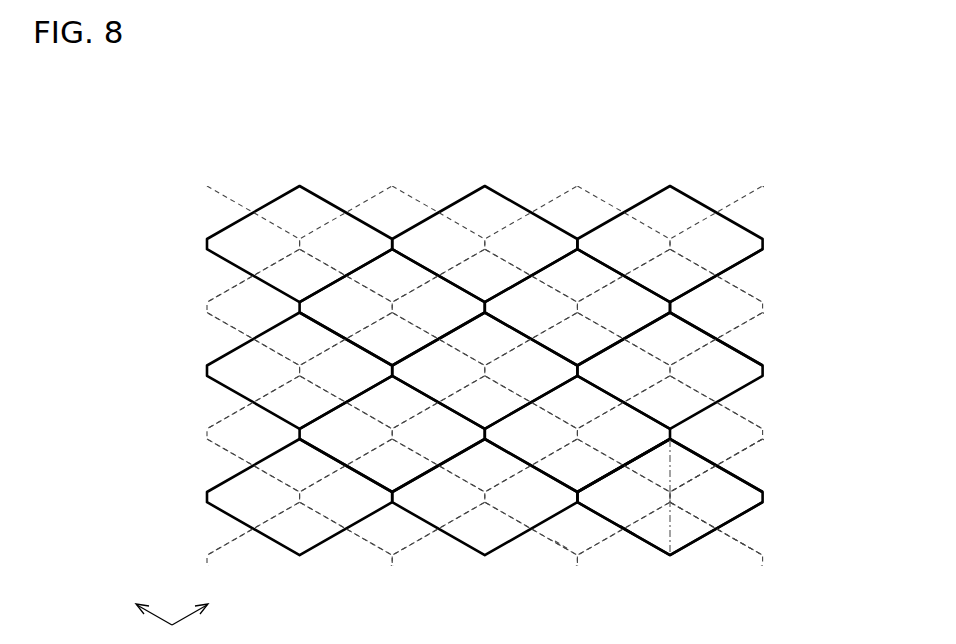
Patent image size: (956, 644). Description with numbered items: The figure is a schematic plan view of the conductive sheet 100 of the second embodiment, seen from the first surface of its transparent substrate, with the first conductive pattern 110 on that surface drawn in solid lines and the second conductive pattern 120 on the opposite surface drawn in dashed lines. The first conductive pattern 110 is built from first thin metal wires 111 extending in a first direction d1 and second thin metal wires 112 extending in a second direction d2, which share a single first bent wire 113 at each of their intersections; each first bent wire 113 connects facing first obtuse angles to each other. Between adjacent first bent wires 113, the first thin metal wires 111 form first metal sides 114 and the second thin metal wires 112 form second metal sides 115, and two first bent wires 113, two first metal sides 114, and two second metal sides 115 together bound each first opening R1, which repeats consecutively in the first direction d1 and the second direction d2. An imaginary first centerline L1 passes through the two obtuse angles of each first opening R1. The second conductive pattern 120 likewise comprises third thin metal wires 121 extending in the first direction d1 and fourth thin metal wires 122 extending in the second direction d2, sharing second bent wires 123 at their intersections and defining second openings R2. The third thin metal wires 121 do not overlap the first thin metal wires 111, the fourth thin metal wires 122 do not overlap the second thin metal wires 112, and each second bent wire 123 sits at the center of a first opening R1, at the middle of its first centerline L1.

The conductive sheet 100 is at (288, 150).
The first conductive pattern 110 is at (707, 178).
The first thin metal wires 111 is at (743, 262).
The second thin metal wires 112 is at (742, 354).
The first bent wires 113 is at (672, 303).
The first metal sides 114 is at (660, 446).
The second metal sides 115 is at (685, 448).
The second conductive pattern 120 is at (594, 181).
The third thin metal wires 121 is at (743, 453).
The fourth thin metal wires 122 is at (743, 543).
The second bent wires 123 is at (672, 492).
The first centerline L1 is at (660, 547).
The first opening R1 is at (627, 536).
The second opening R2 is at (564, 537).
The first direction d1 is at (202, 607).
The second direction d2 is at (141, 607).